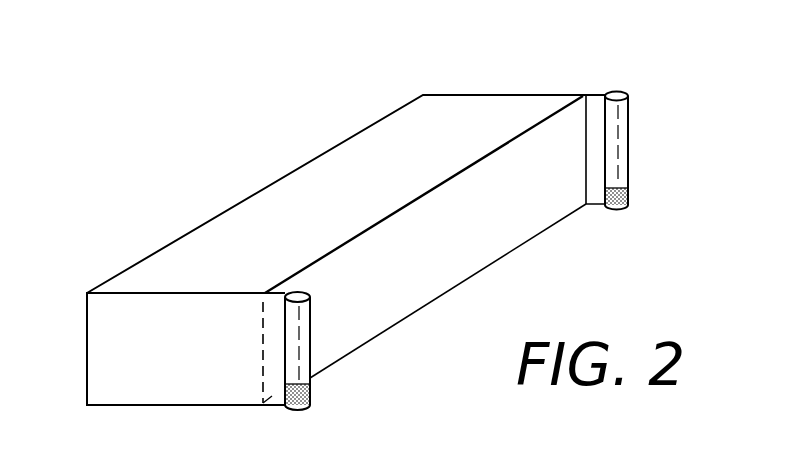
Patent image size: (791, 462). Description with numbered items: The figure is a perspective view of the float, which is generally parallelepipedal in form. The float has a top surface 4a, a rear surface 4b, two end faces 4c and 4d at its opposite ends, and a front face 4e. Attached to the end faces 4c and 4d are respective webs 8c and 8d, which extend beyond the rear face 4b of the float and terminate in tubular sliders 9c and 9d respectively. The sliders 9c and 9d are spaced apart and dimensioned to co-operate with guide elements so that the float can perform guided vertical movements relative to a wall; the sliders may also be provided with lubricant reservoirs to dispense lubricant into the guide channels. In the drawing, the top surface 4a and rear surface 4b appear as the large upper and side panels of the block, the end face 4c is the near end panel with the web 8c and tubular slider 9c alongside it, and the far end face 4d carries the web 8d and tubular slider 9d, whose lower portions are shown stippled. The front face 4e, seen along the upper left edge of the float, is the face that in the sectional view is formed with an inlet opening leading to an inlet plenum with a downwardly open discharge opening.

The top surface 4a is at (372, 207).
The rear surface 4b is at (443, 271).
The end face 4c is at (200, 370).
The end face 4d is at (512, 92).
The front face 4e is at (250, 198).
The web 8c is at (264, 334).
The web 8d is at (595, 112).
The tubular slider 9c is at (298, 365).
The tubular slider 9d is at (612, 163).